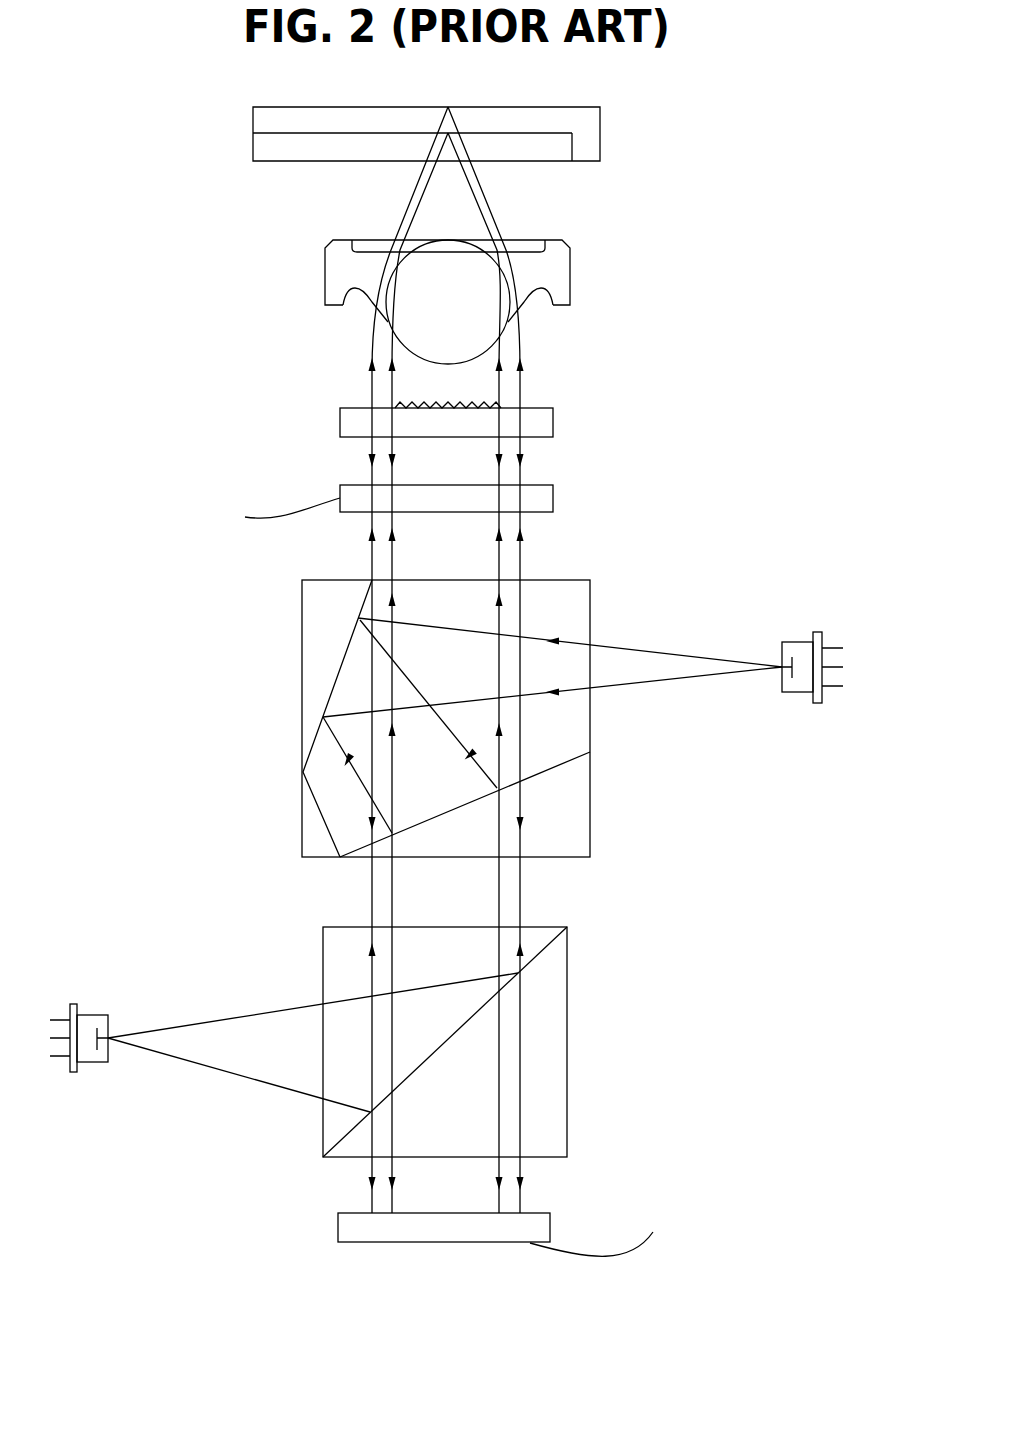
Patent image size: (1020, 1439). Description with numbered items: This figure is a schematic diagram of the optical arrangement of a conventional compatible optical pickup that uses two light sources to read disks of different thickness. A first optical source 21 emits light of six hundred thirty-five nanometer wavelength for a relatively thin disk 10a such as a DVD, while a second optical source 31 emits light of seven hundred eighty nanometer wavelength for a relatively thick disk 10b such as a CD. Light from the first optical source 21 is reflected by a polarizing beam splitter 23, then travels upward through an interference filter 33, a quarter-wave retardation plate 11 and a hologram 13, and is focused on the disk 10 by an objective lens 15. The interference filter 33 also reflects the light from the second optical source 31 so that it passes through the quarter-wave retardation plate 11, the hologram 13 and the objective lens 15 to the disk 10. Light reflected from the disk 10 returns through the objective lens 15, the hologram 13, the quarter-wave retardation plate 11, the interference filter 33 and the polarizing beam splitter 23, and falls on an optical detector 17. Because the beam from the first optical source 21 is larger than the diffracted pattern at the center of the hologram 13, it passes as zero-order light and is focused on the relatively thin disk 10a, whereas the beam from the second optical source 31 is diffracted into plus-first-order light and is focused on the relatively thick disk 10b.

The disk 10 is at (421, 132).
The relatively thin disk 10a is at (268, 148).
The relatively thick disk 10b is at (273, 122).
The objective lens 15 is at (565, 268).
The hologram 13 is at (553, 426).
The λ/4 retardation plate 11 is at (553, 501).
The interference filter 33 is at (587, 597).
The second optical source 31 is at (800, 640).
The polarizing beam splitter 23 is at (567, 975).
The first optical source 21 is at (103, 1066).
The optical detector 17 is at (550, 1222).